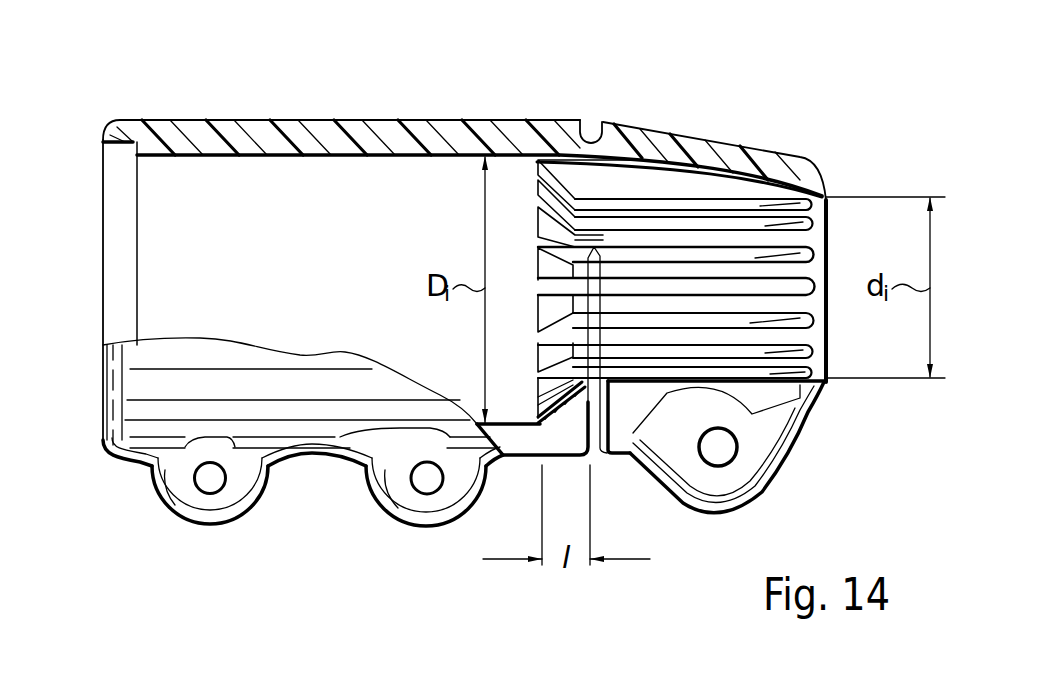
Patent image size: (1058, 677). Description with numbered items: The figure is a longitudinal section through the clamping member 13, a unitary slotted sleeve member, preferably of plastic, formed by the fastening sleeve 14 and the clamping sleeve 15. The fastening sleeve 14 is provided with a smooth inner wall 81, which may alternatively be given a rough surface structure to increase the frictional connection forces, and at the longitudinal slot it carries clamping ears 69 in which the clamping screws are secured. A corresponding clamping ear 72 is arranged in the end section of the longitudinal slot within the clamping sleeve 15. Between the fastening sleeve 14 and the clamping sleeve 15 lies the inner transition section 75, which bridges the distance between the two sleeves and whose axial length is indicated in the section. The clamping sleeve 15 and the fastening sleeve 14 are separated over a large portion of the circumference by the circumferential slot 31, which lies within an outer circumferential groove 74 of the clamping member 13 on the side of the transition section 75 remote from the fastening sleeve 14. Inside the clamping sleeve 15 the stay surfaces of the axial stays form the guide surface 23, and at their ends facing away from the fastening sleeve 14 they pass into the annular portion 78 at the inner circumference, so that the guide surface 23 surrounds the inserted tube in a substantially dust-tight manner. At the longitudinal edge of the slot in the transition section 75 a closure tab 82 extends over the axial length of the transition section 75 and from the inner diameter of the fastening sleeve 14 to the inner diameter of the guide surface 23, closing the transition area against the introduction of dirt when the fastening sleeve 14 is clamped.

The clamping member 13 is at (442, 99).
The fastening sleeve 14 is at (297, 134).
The clamping sleeve 15 is at (693, 140).
The guide surface 23 is at (712, 234).
The circumferential slot 31 is at (603, 372).
The clamping ear 69 is at (192, 503).
The clamping ear 72 is at (738, 477).
The circumferential groove 74 is at (592, 133).
The transition section 75 is at (538, 313).
The annular portion 78 is at (822, 252).
The inner wall 81 is at (212, 162).
The closure tab 82 is at (553, 400).